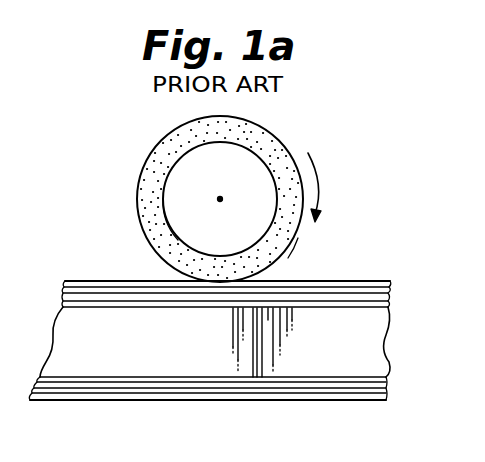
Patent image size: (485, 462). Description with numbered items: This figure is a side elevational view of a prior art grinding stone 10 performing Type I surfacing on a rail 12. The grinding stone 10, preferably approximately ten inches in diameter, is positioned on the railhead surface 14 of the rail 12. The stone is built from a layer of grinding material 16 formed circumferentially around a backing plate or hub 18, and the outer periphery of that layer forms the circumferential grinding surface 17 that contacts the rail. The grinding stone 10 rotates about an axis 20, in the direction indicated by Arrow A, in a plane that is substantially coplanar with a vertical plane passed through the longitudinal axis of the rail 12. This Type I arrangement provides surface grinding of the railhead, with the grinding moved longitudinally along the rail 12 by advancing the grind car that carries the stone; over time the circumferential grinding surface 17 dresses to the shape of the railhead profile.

The grinding stone 10 is at (131, 131).
The rail 12 is at (78, 368).
The railhead surface 14 is at (102, 284).
The layer of grinding material 16 is at (277, 143).
The circumferential grinding surface 17 is at (289, 249).
The backing plate or hub 18 is at (177, 218).
The axis 20 is at (218, 199).
The Arrow A is at (318, 183).